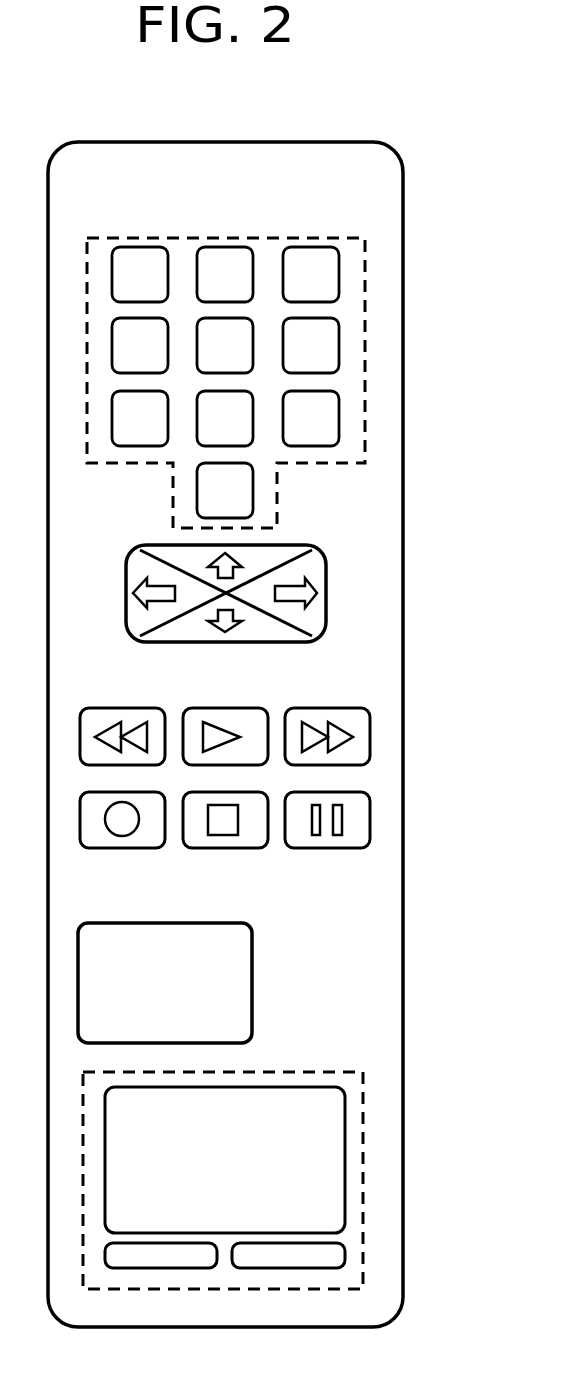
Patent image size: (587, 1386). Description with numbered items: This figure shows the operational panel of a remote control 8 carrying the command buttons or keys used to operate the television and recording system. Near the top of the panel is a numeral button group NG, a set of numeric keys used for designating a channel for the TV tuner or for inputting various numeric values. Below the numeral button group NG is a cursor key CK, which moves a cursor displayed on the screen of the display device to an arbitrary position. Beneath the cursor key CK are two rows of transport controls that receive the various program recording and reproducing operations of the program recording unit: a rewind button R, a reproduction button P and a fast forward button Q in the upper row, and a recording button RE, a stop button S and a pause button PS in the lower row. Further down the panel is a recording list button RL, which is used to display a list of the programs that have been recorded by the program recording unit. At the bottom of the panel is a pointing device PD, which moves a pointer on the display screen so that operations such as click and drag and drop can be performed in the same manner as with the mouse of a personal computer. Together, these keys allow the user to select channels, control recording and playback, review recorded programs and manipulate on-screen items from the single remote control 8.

The remote control 8 is at (403, 401).
The numeral button group NG is at (293, 237).
The cursor key CK is at (287, 553).
The rewind button R is at (150, 710).
The reproduction button P is at (250, 710).
The fast forward button Q is at (355, 710).
The recording button RE is at (98, 848).
The stop button S is at (200, 848).
The pause button PS is at (300, 848).
The recording list button RL is at (252, 957).
The pointing device PD is at (353, 1072).